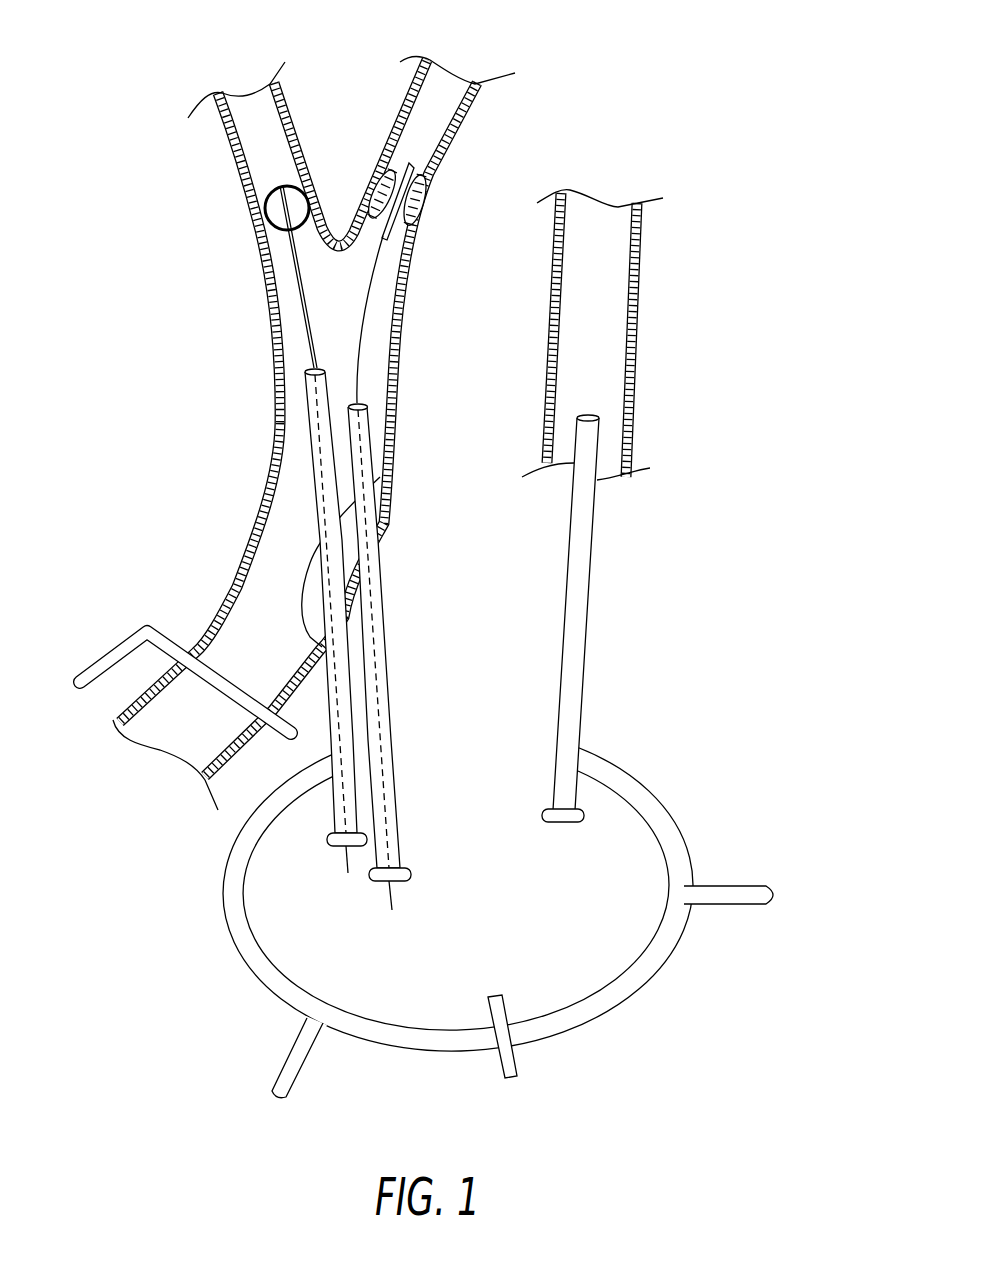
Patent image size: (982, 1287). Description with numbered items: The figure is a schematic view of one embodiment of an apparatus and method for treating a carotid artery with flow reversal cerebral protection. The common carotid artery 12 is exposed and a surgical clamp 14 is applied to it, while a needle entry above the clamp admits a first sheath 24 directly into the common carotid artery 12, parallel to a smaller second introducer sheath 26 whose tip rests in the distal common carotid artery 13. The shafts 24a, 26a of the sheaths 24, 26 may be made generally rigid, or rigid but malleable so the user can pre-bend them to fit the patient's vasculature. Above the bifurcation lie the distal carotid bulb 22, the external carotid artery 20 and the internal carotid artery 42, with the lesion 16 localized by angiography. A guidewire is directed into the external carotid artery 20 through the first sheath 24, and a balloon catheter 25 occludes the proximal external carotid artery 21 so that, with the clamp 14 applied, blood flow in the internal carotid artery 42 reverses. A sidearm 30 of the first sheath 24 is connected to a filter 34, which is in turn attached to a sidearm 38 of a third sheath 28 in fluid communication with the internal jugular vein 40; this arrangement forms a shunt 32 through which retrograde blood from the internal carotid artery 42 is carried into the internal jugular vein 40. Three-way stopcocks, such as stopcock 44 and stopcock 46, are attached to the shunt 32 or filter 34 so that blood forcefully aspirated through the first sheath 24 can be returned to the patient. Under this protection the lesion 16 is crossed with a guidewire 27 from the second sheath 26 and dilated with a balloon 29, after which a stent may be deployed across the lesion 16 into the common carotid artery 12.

The common carotid artery 12 is at (261, 423).
The distal common carotid artery 13 is at (261, 317).
The surgical clamp 14 is at (108, 657).
The lesion 16 is at (412, 203).
The external carotid artery 20 is at (210, 153).
The proximal external carotid artery 21 is at (249, 217).
The distal carotid bulb 22 is at (166, 280).
The first sheath 24 is at (306, 502).
The shaft of the first sheath 24a is at (330, 599).
The balloon catheter 25 is at (295, 176).
The second introducer sheath 26 is at (386, 560).
The shaft of the second sheath 26a is at (367, 443).
The guidewire 27 is at (366, 327).
The third sheath 28 is at (582, 660).
The balloon 29 is at (423, 174).
The sidearm of the first sheath 30 is at (221, 894).
The shunt 32 is at (708, 997).
The filter 34 is at (520, 1058).
The sidearm of the third sheath 38 is at (667, 812).
The internal jugular vein 40 is at (677, 343).
The internal carotid artery 42 is at (401, 82).
The stopcock 44 is at (287, 1057).
The stopcock 46 is at (747, 883).